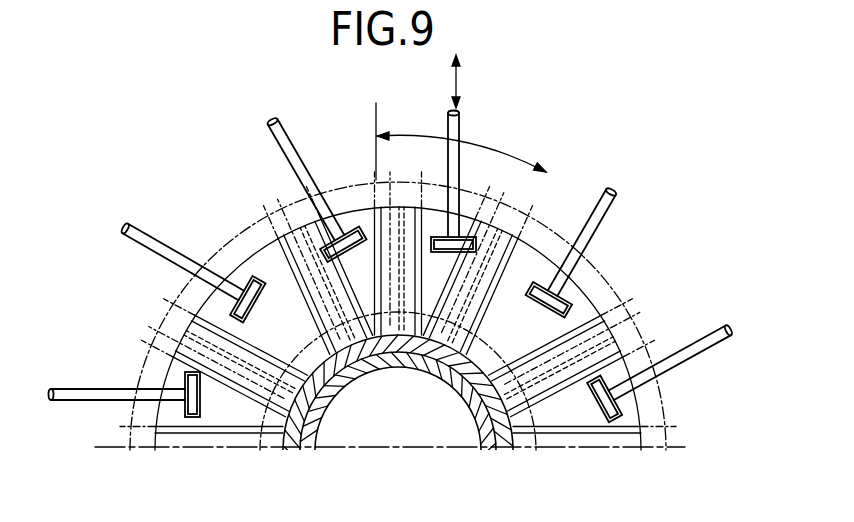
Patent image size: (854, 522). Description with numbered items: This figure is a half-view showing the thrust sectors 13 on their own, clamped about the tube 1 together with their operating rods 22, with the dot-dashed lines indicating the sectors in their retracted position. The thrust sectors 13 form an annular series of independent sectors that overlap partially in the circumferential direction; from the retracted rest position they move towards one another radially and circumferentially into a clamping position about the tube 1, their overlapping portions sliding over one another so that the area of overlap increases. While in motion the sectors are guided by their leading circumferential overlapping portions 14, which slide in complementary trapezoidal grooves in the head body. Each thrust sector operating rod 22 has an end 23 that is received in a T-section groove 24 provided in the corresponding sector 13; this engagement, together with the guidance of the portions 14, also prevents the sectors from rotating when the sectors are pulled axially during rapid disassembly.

The tube 1 is at (463, 152).
The thrust sectors 13 is at (481, 216).
The leading circumferential overlapping portions 14 is at (392, 232).
The thrust sector operating rods 22 is at (448, 192).
The ends of the operating rods 23 is at (422, 212).
The T-section grooves 24 is at (434, 249).